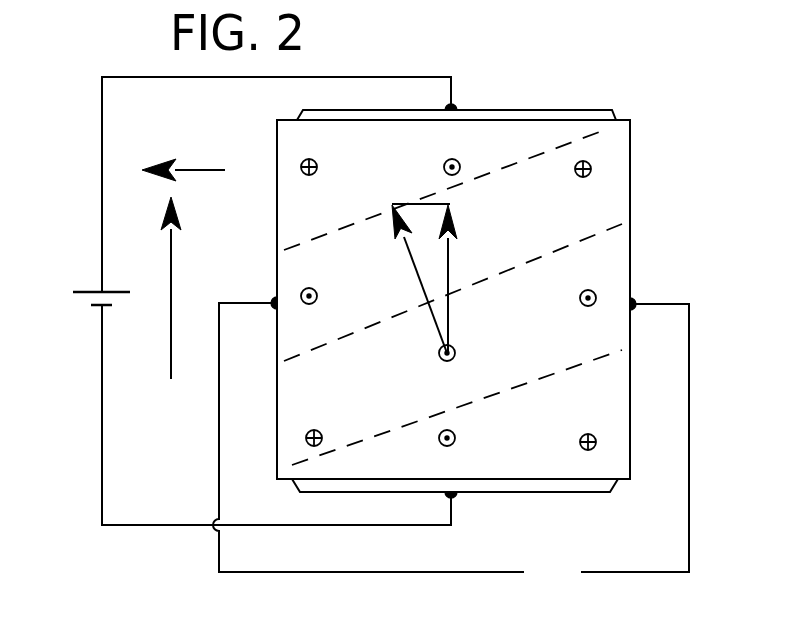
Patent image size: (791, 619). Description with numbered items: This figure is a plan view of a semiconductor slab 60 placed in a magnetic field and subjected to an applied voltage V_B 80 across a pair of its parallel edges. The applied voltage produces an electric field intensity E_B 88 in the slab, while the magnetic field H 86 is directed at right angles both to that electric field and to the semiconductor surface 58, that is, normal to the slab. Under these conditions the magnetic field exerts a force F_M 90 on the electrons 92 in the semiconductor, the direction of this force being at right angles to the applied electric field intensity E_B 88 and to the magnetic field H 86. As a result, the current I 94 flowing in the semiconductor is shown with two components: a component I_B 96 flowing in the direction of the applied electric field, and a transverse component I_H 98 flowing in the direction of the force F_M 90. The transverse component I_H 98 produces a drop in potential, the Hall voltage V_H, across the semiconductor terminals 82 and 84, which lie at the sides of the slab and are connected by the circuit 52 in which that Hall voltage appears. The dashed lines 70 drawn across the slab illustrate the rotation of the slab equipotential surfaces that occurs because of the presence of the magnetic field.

The heater voltage source circuit 52 is at (570, 553).
The semiconductor surface 58 is at (615, 206).
The semiconductor slab 60 is at (567, 86).
The lines 70 is at (572, 132).
The applied voltage V_B 80 is at (79, 281).
The semiconductor terminal 82 is at (265, 326).
The semiconductor terminal 84 is at (663, 331).
The magnetic field H 86 is at (595, 162).
The electric field intensity E_B 88 is at (178, 268).
The force F_M 90 is at (170, 156).
The electrons 92 is at (456, 349).
The current I 94 is at (408, 240).
The current component I_B 96 is at (453, 248).
The transverse current component I_H 98 is at (430, 204).